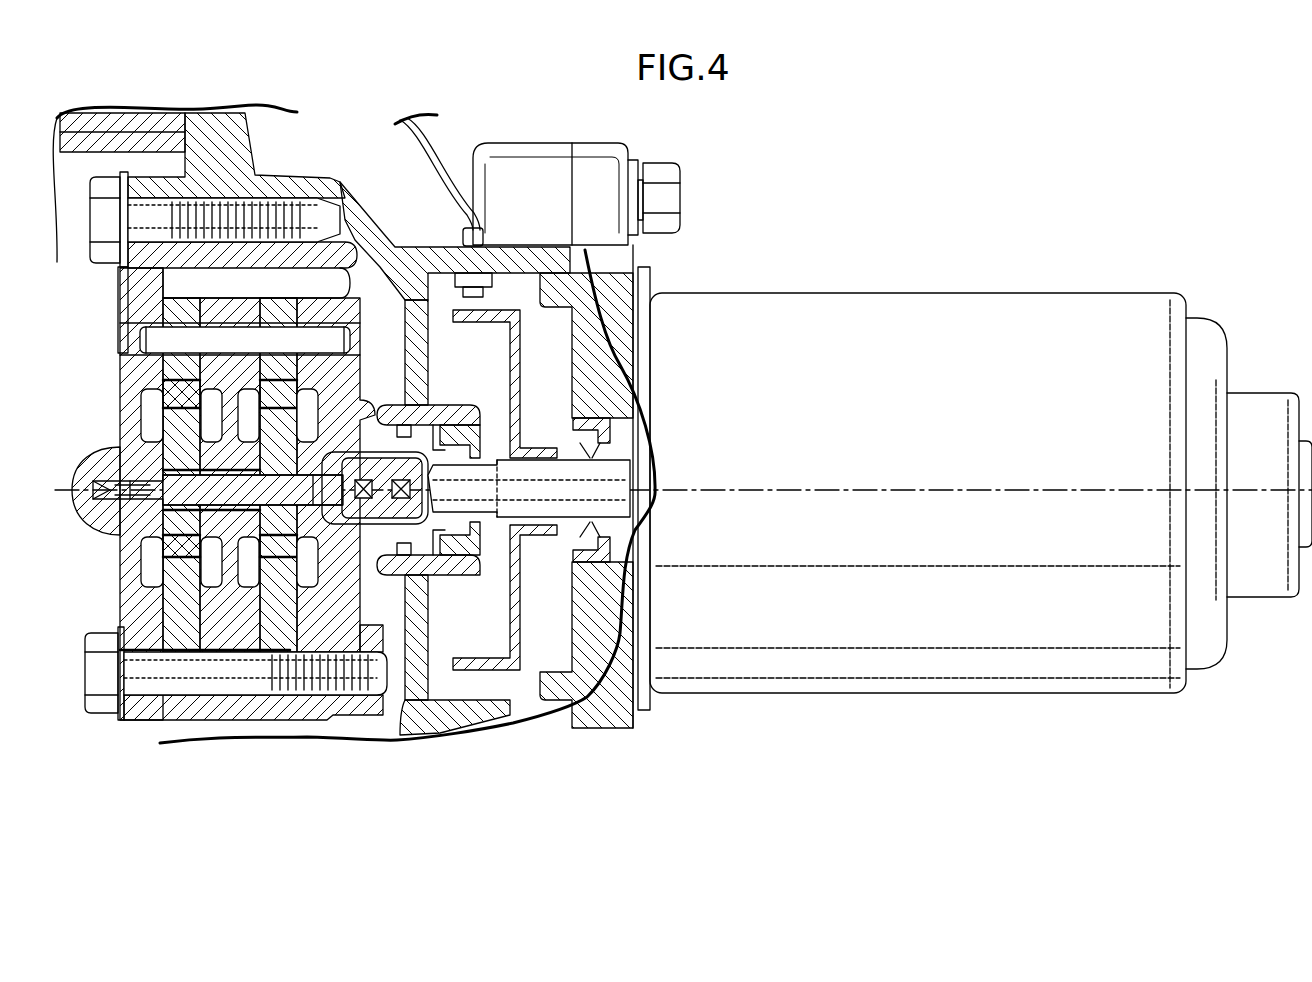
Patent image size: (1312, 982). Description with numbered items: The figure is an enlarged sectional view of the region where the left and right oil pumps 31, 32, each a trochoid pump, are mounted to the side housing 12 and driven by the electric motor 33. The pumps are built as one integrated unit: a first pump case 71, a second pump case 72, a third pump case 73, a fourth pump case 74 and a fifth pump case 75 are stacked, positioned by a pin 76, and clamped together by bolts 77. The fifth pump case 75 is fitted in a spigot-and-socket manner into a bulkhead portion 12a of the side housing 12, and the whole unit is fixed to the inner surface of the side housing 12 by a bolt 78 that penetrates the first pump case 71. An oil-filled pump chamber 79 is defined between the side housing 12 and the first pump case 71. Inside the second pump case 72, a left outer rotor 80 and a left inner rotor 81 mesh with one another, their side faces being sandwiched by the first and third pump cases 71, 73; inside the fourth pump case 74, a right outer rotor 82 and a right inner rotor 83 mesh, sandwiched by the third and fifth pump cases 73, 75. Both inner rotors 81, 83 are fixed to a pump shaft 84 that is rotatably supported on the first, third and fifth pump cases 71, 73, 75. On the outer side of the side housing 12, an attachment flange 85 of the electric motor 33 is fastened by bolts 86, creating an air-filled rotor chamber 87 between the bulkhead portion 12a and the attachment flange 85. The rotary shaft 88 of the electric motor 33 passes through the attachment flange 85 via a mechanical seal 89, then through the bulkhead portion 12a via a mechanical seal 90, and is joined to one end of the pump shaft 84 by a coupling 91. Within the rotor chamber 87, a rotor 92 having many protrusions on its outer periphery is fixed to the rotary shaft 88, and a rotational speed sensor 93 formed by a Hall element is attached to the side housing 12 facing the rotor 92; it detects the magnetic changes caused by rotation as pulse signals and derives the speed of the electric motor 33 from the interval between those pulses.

The side housing 12 is at (384, 240).
The bulkhead portion 12a is at (428, 620).
The left oil pump 31 is at (187, 291).
The right oil pump 32 is at (277, 291).
The electric motor 33 is at (930, 503).
The first pump case 71 is at (128, 306).
The second pump case 72 is at (170, 290).
The third pump case 73 is at (247, 303).
The fourth pump case 74 is at (283, 303).
The fifth pump case 75 is at (345, 308).
The pin 76 is at (240, 339).
The bolts 77 is at (95, 717).
The bolt 78 is at (105, 183).
The pump chamber 79 is at (404, 360).
The left outer rotor 80 is at (162, 396).
The left inner rotor 81 is at (150, 422).
The right outer rotor 82 is at (322, 406).
The right inner rotor 83 is at (288, 430).
The pump shaft 84 is at (140, 515).
The attachment flange 85 is at (580, 368).
The bolts 86 is at (668, 200).
The rotor chamber 87 is at (480, 373).
The rotary shaft 88 is at (578, 503).
The mechanical seal 89 is at (592, 447).
The mechanical seal 90 is at (480, 530).
The coupling 91 is at (360, 520).
The rotor 92 is at (525, 370).
The rotational speed sensor 93 is at (480, 277).